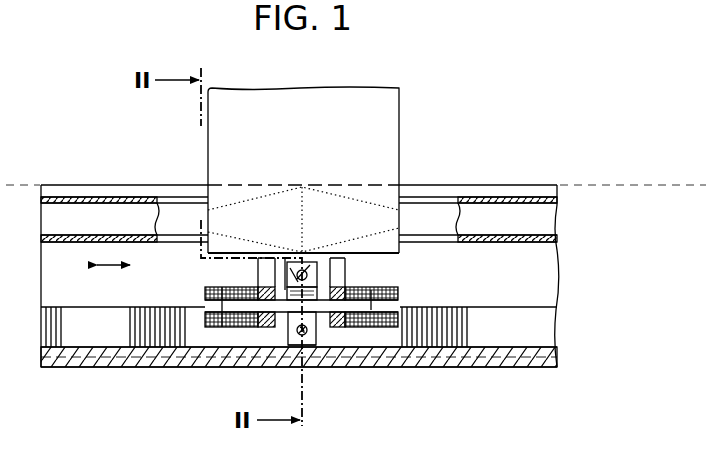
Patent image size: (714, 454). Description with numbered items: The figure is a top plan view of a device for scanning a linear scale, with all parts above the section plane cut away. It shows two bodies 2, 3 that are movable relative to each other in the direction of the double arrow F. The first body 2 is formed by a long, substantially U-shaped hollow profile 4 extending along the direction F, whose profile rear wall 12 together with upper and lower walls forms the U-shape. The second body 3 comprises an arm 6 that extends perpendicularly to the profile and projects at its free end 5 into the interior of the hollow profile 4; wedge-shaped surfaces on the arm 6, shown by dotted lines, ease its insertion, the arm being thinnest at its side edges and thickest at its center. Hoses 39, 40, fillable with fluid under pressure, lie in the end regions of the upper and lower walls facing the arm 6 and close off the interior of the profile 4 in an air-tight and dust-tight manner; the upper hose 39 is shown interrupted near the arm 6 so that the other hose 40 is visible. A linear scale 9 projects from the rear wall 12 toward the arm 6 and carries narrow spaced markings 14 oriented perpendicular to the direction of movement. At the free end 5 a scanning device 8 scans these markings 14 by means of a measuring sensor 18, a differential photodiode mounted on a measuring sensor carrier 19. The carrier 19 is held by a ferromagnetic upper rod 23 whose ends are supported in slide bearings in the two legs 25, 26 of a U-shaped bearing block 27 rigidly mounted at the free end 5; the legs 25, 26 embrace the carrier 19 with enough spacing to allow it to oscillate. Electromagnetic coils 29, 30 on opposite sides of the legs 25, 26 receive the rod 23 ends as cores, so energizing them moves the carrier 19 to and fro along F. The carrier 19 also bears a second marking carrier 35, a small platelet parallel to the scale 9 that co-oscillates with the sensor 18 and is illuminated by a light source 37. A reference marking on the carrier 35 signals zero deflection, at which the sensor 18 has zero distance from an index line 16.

The body 2 is at (470, 372).
The body 3 is at (416, 136).
The U-shaped hollow profile 4 is at (548, 289).
The free end of arm 5 is at (400, 248).
The arm 6 is at (309, 133).
The scanning device 8 is at (244, 278).
The linear scale 9 is at (519, 339).
The profile rear wall 12 is at (180, 360).
The markings 14 is at (128, 315).
The index line 16 is at (305, 283).
The measuring sensor 18 is at (308, 350).
The measuring sensor carrier 19 is at (297, 346).
The upper rod 23 is at (371, 305).
The leg of bearing block 25 is at (262, 328).
The leg of bearing block 26 is at (340, 328).
The bearing block 27 is at (258, 262).
The electromagnetic coil 29 is at (205, 292).
The electromagnetic coil 30 is at (399, 291).
The second marking carrier 35 is at (290, 258).
The light source 37 is at (303, 255).
The hose 39 is at (70, 243).
The hose 40 is at (438, 228).
The double arrow F is at (113, 280).